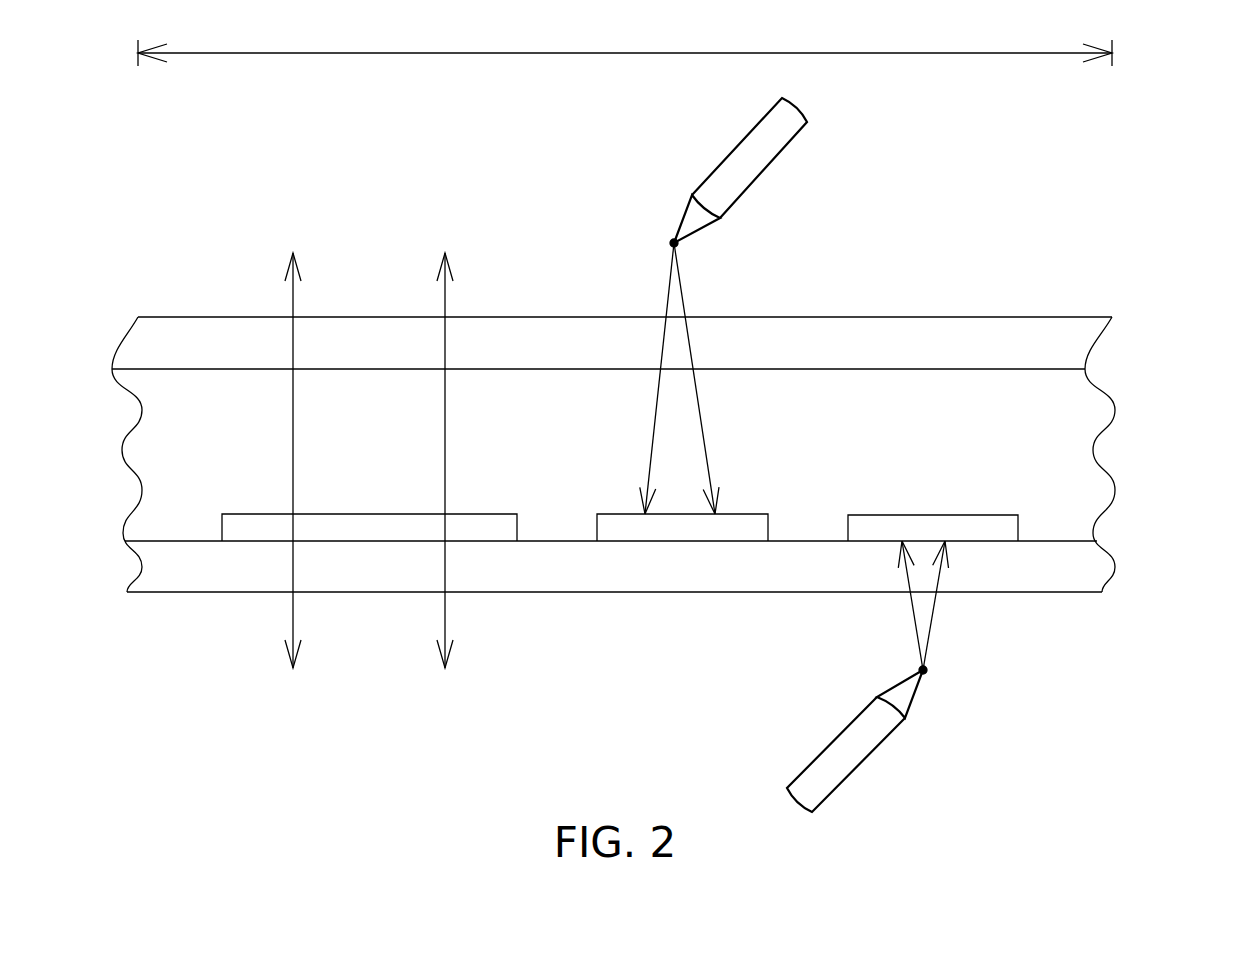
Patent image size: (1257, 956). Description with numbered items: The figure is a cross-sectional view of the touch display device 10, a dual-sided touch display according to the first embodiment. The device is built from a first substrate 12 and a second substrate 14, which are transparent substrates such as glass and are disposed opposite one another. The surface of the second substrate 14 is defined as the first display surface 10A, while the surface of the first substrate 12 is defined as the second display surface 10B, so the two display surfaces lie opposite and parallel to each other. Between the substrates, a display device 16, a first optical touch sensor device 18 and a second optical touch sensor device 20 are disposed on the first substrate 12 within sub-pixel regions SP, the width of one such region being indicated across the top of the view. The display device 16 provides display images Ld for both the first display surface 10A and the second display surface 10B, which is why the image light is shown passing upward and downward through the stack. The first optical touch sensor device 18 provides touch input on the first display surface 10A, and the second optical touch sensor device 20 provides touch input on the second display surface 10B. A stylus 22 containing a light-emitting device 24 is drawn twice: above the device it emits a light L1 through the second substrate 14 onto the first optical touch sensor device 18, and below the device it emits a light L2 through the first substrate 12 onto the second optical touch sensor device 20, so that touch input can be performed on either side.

The touch display device 10 is at (675, 408).
The first display surface 10A is at (952, 317).
The second display surface 10B is at (614, 593).
The first substrate 12 is at (613, 620).
The second substrate 14 is at (612, 292).
The display device 16 is at (397, 527).
The first optical touch sensor device 18 is at (742, 527).
The second optical touch sensor device 20 is at (923, 527).
The stylus 22 is at (735, 147).
The light-emitting device 24 is at (672, 238).
The sub-pixel region SP is at (625, 42).
The display image Ld is at (292, 300).
The light L1 is at (680, 284).
The light L2 is at (910, 625).